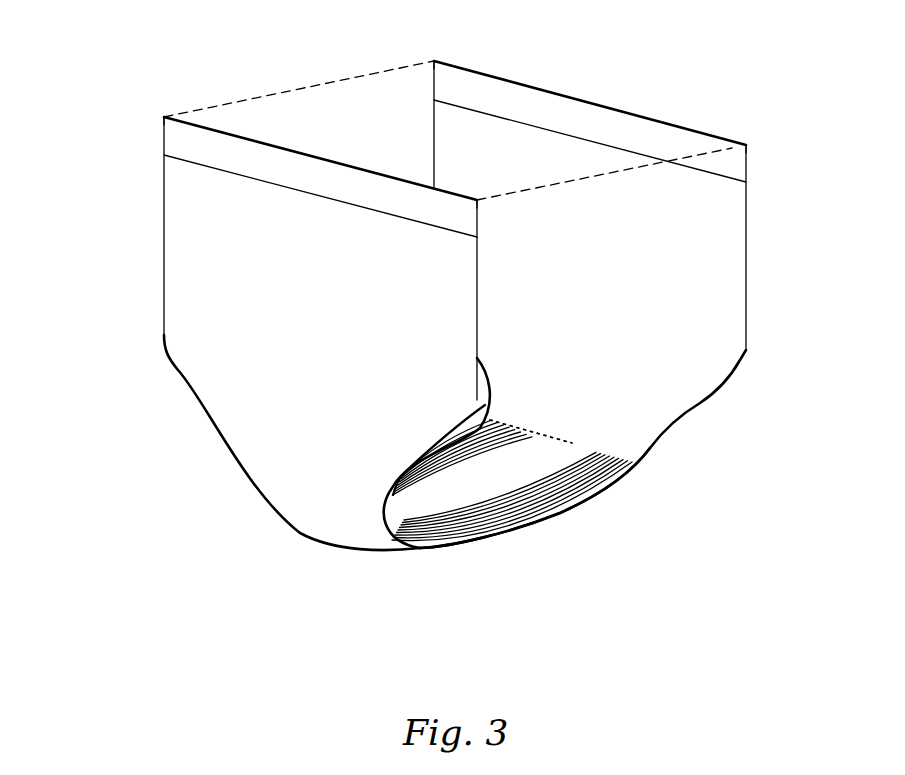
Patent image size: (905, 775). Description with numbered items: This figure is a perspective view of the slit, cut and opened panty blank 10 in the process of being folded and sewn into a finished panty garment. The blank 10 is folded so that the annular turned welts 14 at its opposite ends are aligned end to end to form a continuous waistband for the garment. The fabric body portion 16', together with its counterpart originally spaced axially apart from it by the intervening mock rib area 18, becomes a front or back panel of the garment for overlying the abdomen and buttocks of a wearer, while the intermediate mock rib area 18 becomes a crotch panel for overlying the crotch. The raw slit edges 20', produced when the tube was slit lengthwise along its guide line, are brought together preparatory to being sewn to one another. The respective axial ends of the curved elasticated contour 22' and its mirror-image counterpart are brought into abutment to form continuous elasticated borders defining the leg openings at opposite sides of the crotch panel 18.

The panty blank 10 is at (727, 443).
The annular turned welts 14 is at (527, 107).
The fabric body portion 16' is at (409, 248).
The mock rib area 18 is at (581, 455).
The raw slit edges 20' is at (427, 164).
The elasticated contour 22' is at (431, 453).